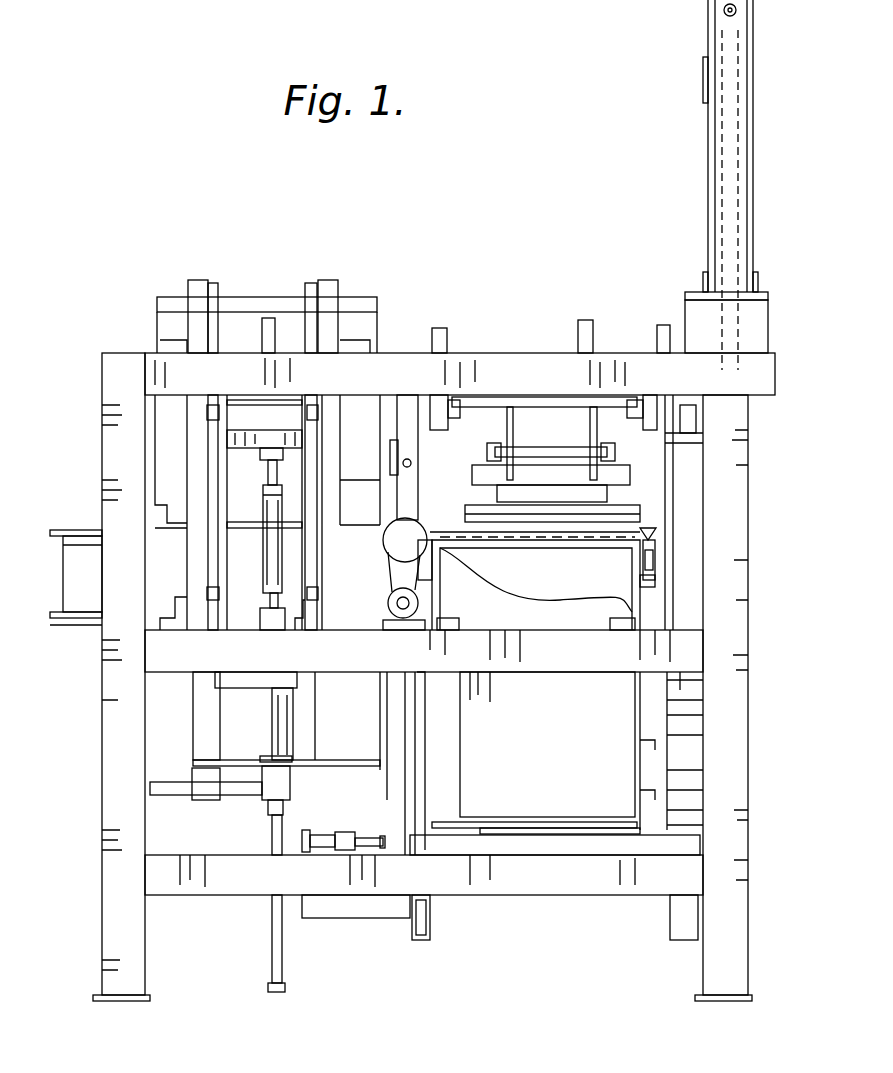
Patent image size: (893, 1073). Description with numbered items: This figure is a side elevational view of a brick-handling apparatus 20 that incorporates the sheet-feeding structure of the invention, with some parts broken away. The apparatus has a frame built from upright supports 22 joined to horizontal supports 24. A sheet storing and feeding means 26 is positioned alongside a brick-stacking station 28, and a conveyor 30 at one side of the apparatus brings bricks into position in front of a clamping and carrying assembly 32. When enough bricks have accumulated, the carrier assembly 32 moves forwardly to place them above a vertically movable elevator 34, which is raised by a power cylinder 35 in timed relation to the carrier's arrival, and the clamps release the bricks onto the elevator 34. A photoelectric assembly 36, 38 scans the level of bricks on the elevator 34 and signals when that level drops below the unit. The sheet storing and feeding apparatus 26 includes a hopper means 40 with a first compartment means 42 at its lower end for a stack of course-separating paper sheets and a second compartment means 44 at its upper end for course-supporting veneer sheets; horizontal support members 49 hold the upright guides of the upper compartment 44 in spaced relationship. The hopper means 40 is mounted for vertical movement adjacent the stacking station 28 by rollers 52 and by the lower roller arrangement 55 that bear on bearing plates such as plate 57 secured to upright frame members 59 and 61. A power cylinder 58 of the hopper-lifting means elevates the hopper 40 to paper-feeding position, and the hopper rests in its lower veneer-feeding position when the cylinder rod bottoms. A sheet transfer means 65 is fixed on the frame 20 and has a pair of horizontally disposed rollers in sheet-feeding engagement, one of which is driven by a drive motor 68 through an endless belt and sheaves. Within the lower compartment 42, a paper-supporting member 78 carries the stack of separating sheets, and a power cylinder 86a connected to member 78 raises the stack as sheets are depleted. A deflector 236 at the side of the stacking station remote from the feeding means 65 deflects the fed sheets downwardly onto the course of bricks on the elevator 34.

The brick-handling apparatus 20 is at (419, 668).
The upright supports 22 is at (735, 705).
The horizontal supports 24 is at (510, 365).
The sheet storing and feeding means 26 is at (156, 721).
The brick-stacking station 28 is at (660, 509).
The conveyor 30 is at (82, 519).
The clamping and carrying assembly 32 is at (656, 483).
The elevator 34 is at (555, 826).
The power cylinder 35 is at (745, 103).
The photoelectric assembly 36 is at (656, 555).
The photoelectric assembly 38 is at (420, 565).
The hopper means 40 is at (236, 451).
The first compartment means 42 is at (349, 768).
The second compartment means 44 is at (140, 442).
The horizontal support members 49 is at (268, 440).
The rollers 52 is at (212, 406).
The guide rod 55 is at (215, 285).
The bearing plate 57 is at (310, 288).
The power cylinder 58 is at (272, 575).
The upright frame member 59 is at (196, 283).
The upright frame member 61 is at (336, 288).
The sheet transfer means 65 is at (438, 511).
The drive motor 68 is at (395, 614).
The paper-supporting member 78 is at (352, 760).
The power cylinder 86a is at (262, 941).
The deflector 236 is at (650, 530).